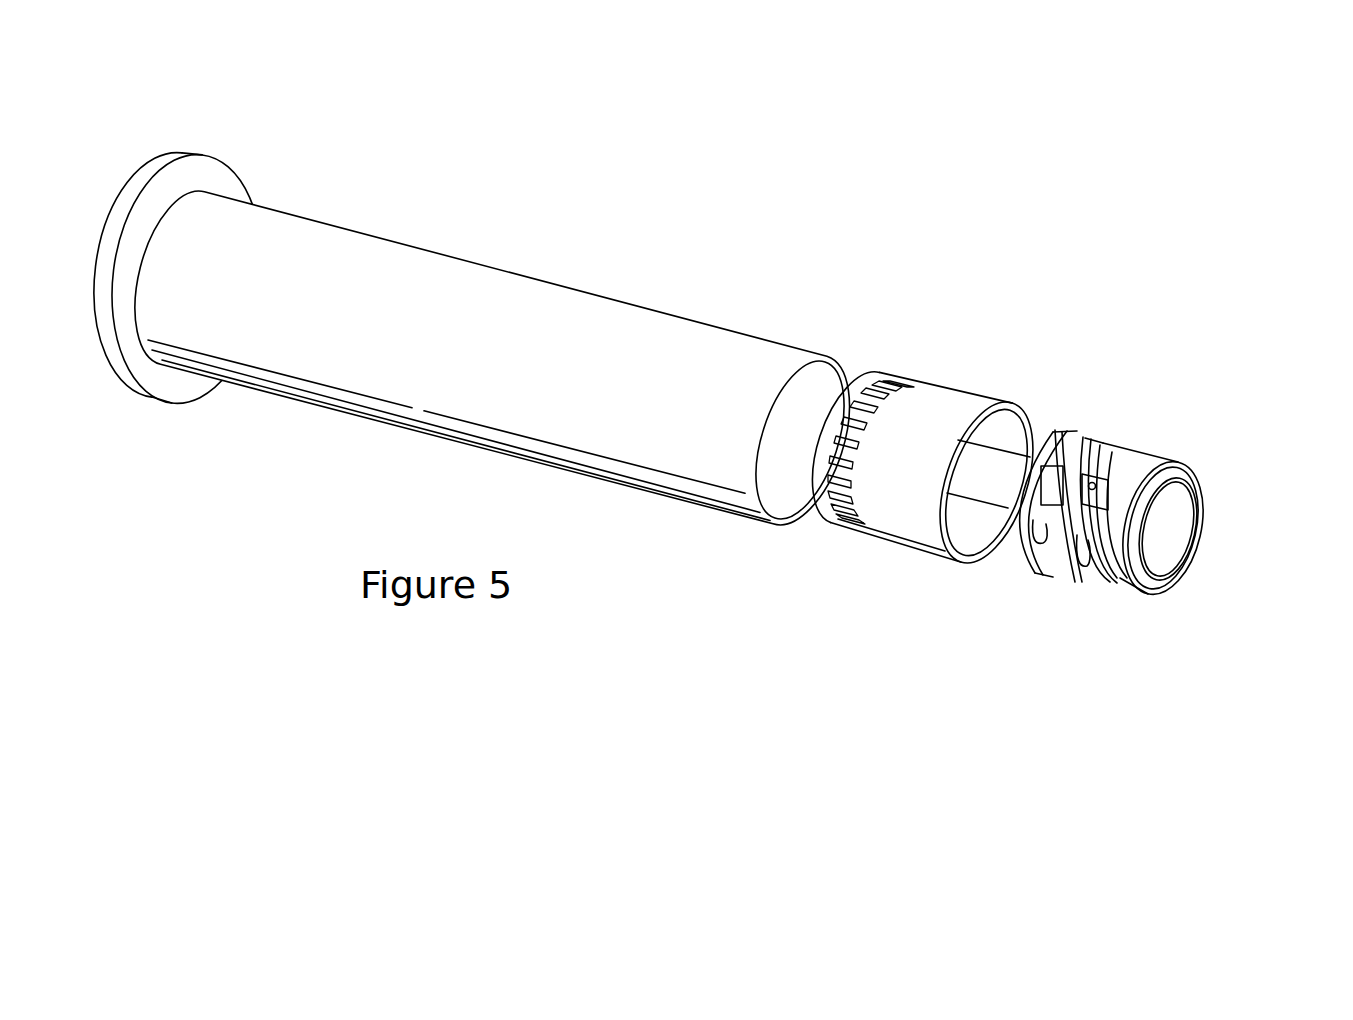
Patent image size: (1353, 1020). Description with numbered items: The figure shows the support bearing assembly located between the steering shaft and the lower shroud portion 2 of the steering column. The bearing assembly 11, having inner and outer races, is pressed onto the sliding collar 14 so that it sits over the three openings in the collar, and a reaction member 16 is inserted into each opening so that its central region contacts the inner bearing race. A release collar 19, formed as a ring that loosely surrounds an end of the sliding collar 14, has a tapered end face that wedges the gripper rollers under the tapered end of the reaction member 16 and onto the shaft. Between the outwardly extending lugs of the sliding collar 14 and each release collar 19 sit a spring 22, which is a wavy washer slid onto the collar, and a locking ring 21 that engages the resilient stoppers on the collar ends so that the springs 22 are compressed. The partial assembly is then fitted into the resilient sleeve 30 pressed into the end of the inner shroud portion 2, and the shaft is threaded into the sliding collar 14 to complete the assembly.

The lower shroud portion 2 is at (513, 290).
The resilient sleeve 30 is at (915, 408).
The locking ring 21 is at (1053, 440).
The reaction member 16 is at (1147, 450).
The sliding collar 14 is at (1178, 528).
The spring 22 is at (1017, 508).
The release collar 19 is at (1017, 562).
The bearing assembly 11 is at (1050, 573).